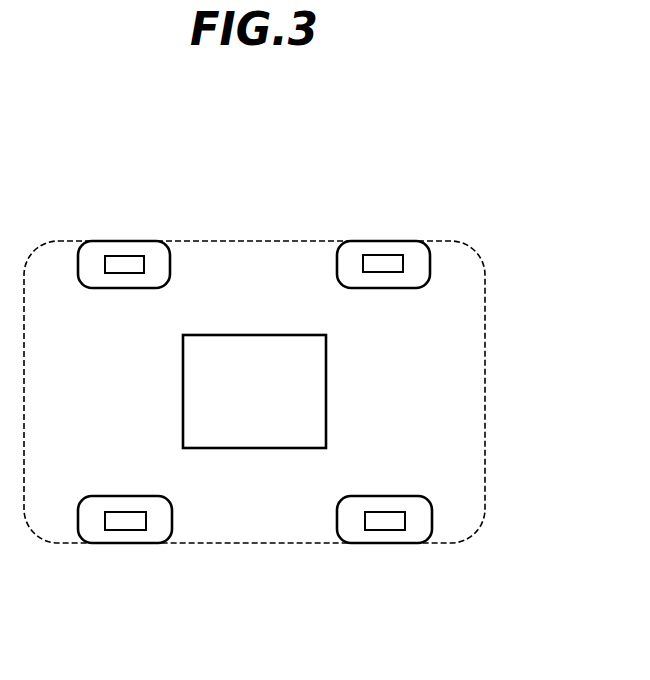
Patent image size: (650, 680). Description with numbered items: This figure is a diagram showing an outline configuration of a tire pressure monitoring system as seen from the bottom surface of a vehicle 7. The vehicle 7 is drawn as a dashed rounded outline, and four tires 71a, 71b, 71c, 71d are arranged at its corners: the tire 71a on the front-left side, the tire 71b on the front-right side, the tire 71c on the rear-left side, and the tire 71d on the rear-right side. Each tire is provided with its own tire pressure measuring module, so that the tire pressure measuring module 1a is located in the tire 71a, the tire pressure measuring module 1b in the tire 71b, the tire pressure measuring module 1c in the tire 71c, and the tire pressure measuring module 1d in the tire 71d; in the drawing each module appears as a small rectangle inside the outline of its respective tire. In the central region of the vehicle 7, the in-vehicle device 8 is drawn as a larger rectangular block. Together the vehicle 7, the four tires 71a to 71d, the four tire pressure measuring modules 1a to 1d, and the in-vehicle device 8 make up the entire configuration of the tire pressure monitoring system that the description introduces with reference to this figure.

The vehicle 7 is at (485, 357).
The in-vehicle device 8 is at (253, 448).
The tire pressure measuring module 1a is at (375, 255).
The tire pressure measuring module 1b is at (133, 256).
The tire pressure measuring module 1c is at (133, 530).
The tire pressure measuring module 1d is at (377, 530).
The tire 71a is at (407, 241).
The tire 71b is at (103, 241).
The tire 71c is at (103, 543).
The tire 71d is at (405, 543).